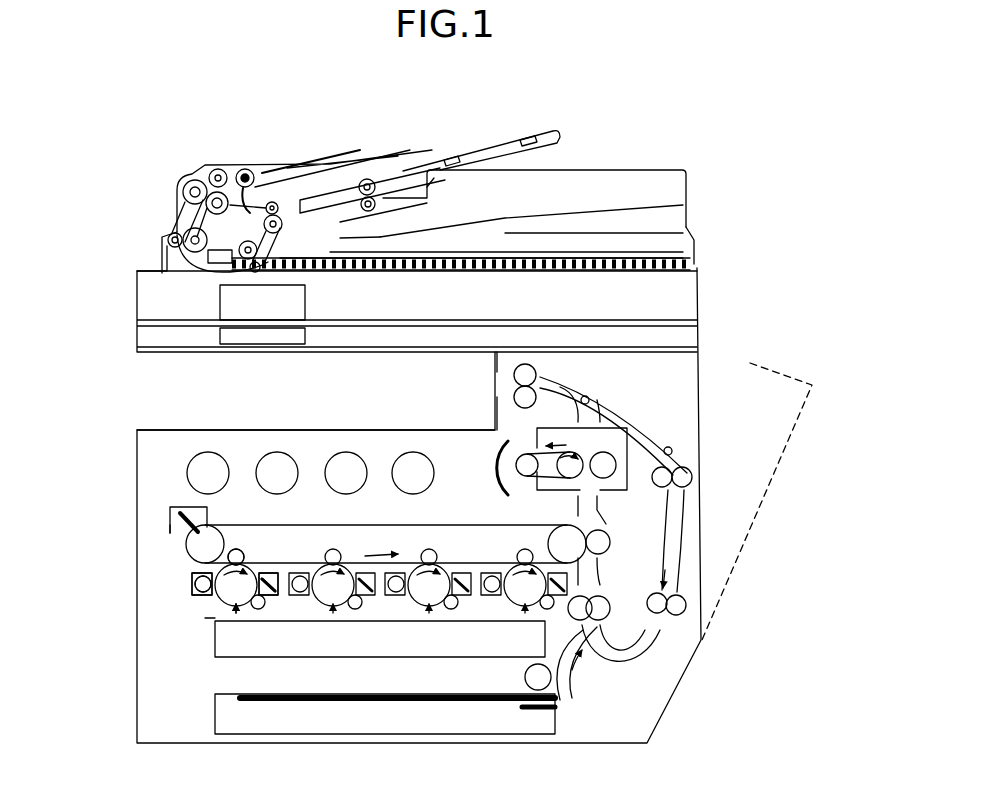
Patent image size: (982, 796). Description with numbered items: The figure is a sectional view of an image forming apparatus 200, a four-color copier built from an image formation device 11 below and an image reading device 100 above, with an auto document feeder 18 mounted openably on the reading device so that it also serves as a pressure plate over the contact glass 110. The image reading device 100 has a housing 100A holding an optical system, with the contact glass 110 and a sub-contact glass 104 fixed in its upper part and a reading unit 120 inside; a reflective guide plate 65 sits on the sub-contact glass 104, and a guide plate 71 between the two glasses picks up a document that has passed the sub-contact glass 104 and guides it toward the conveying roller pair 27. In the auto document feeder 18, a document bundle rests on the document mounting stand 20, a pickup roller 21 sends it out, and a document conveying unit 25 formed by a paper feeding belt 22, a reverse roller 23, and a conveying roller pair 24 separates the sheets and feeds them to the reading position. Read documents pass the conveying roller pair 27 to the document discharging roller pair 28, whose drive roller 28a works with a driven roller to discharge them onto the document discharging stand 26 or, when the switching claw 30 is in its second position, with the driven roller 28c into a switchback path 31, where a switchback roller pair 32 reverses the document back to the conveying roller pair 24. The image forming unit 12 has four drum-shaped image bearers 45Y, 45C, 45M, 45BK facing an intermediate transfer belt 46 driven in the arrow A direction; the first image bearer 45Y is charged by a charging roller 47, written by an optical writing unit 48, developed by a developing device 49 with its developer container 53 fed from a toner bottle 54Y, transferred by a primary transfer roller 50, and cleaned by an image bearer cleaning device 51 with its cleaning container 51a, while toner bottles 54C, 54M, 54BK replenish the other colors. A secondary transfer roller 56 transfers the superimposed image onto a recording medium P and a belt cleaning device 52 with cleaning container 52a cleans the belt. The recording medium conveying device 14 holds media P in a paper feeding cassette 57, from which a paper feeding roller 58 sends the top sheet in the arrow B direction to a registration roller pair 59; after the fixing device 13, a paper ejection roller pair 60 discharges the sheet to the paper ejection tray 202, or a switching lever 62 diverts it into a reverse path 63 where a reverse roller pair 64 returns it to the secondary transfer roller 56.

The image formation device 11 is at (708, 362).
The image forming unit 12 is at (160, 524).
The fixing device 13 is at (634, 447).
The recording medium conveying device 14 is at (178, 626).
The auto document feeder 18 is at (636, 166).
The document mounting stand 20 is at (473, 143).
The pickup roller 21 is at (245, 168).
The paper feeding belt 22 is at (216, 168).
The reverse roller 23 is at (205, 204).
The conveying roller pair 24 is at (170, 236).
The document conveying unit 25 is at (178, 182).
The document discharging stand 26 is at (500, 217).
The conveying roller pair 27 is at (286, 272).
The document discharging roller pair 28 is at (278, 212).
The drive roller 28a is at (320, 185).
The driven roller 28c is at (271, 200).
The switching claw 30 is at (362, 178).
The switchback path 31 is at (432, 183).
The switchback roller pair 32 is at (420, 172).
The first image bearer 45Y is at (258, 566).
The second image bearer 45C is at (336, 606).
The third image bearer 45M is at (426, 606).
The fourth image bearer 45BK is at (522, 606).
The intermediate transfer belt 46 is at (486, 523).
The charging roller 47 is at (258, 603).
The optical writing unit 48 is at (215, 640).
The developing device 49 is at (190, 597).
The primary transfer roller 50 is at (262, 547).
The image bearer cleaning device 51 is at (277, 572).
The cleaning container 51a is at (278, 594).
The belt cleaning device 52 is at (165, 503).
The cleaning container 52a is at (186, 508).
The developer container 53 is at (195, 585).
The toner bottle 54Y is at (212, 452).
The toner bottle 54C is at (280, 452).
The toner bottle 54M is at (348, 452).
The toner bottle 54BK is at (415, 452).
The secondary transfer roller 56 is at (612, 543).
The paper feeding cassette 57 is at (215, 706).
The paper feeding roller 58 is at (524, 677).
The registration roller pair 59 is at (600, 592).
The paper ejection roller pair 60 is at (545, 362).
The switching lever 62 is at (576, 392).
The reverse path 63 is at (676, 455).
The reverse roller pair 64 is at (693, 458).
The reflective guide plate 65 is at (216, 273).
The guide plate 71 is at (250, 275).
The image reading device 100 is at (708, 294).
The housing 100A is at (698, 277).
The sub-contact glass 104 is at (182, 262).
The contact glass 110 is at (394, 276).
The reading unit 120 is at (220, 312).
The image forming apparatus 200 is at (715, 184).
The paper ejection tray 202 is at (175, 430).
The arrow A direction A is at (373, 543).
The arrow B direction B is at (576, 680).
The recording medium P is at (462, 692).